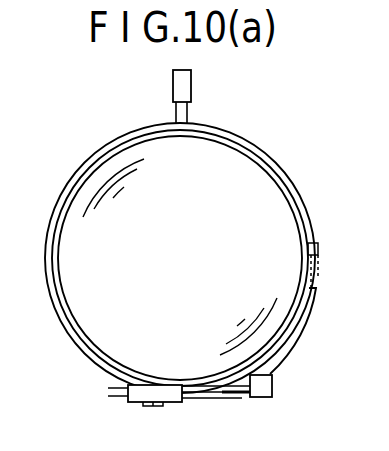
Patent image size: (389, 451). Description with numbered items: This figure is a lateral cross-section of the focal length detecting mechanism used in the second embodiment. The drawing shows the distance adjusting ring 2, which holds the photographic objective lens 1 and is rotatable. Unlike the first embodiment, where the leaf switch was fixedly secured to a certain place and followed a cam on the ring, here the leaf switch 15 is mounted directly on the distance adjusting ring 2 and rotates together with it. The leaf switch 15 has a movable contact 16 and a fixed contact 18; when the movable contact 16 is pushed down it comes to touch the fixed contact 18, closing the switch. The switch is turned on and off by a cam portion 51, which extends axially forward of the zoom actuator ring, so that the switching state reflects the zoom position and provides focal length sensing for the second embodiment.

The photographic objective lens 1 is at (73, 293).
The distance adjusting ring 2 is at (83, 337).
The leaf switch 15 is at (137, 395).
The movable contact 16 is at (232, 395).
The fixed contact 18 is at (205, 400).
The cam portion 51 is at (318, 254).